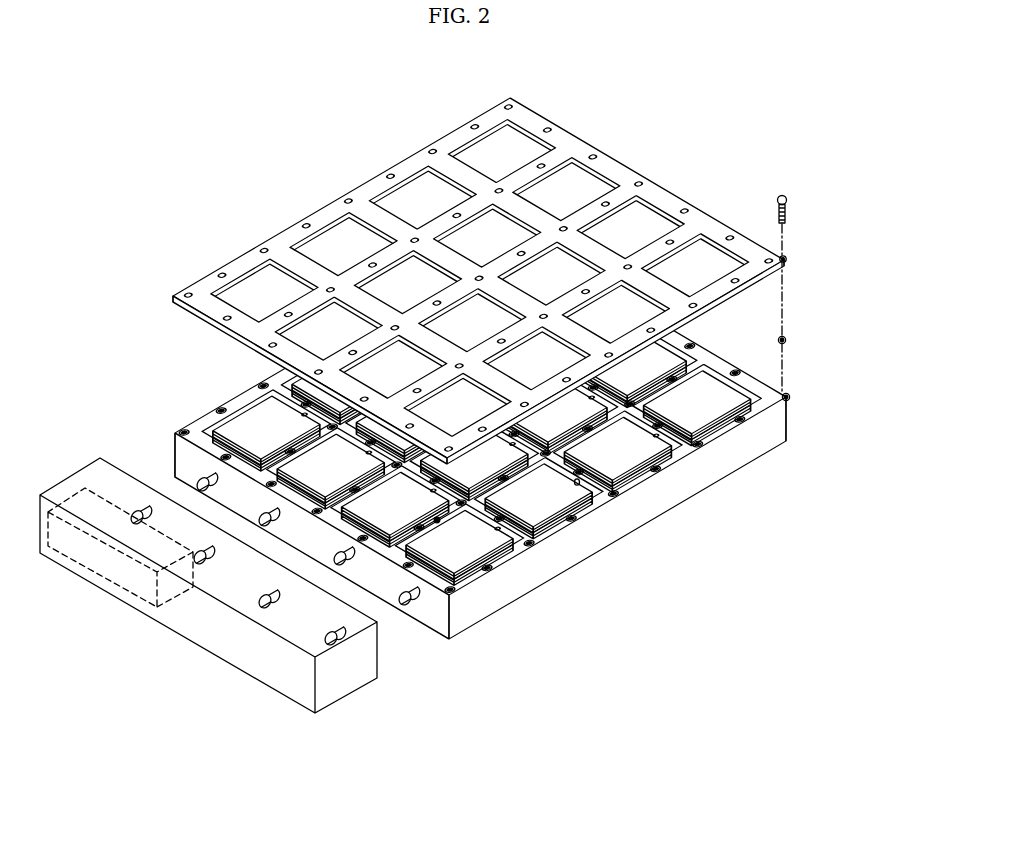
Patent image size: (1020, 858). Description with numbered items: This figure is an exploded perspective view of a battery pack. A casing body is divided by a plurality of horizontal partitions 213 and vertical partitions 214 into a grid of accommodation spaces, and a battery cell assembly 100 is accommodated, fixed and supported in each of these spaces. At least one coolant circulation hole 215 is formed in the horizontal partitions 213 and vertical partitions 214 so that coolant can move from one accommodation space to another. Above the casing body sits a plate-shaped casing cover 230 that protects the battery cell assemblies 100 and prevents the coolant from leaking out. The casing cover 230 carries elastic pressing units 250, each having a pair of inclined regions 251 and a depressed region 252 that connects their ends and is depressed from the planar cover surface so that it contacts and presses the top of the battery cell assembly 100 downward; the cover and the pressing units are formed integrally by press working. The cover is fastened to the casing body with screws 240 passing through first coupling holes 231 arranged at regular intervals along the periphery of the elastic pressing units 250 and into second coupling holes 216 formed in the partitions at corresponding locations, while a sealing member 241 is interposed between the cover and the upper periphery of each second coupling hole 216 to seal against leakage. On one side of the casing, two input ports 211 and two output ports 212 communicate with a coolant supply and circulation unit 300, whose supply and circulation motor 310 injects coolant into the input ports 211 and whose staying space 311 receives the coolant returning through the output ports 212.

The battery cell assembly 100 is at (638, 452).
The input port 211 is at (262, 516).
The output port 212 is at (410, 598).
The horizontal partitions 213 is at (506, 520).
The vertical partitions 214 is at (438, 521).
The coolant circulation hole 215 is at (578, 484).
The second coupling holes 216 is at (790, 396).
The casing cover 230 is at (478, 275).
The first coupling holes 231 is at (787, 257).
The screws 240 is at (787, 199).
The sealing member 241 is at (787, 340).
The elastic pressing unit 250 is at (306, 198).
The inclined regions 251 is at (296, 242).
The depressed region 252 is at (338, 240).
The coolant supply and circulation unit 300 is at (208, 596).
The supply and circulation motor 310 is at (120, 578).
The staying space 311 is at (250, 652).